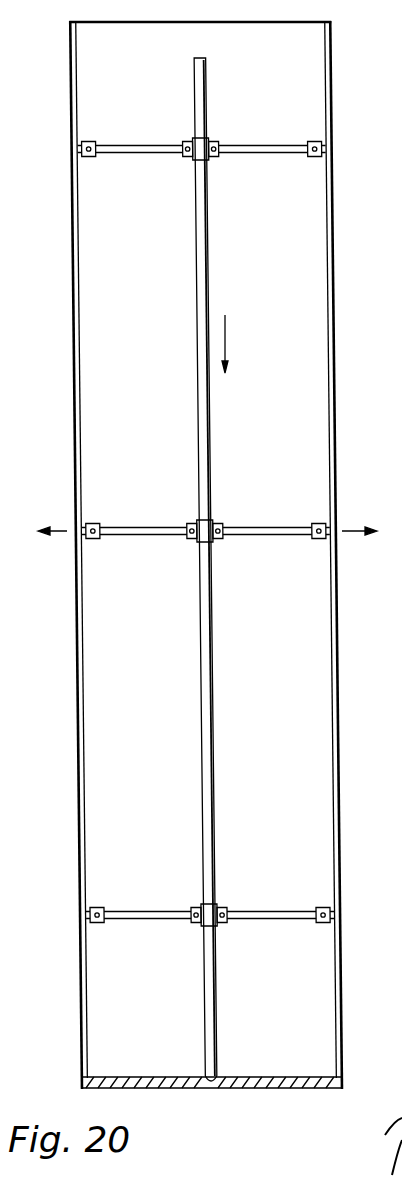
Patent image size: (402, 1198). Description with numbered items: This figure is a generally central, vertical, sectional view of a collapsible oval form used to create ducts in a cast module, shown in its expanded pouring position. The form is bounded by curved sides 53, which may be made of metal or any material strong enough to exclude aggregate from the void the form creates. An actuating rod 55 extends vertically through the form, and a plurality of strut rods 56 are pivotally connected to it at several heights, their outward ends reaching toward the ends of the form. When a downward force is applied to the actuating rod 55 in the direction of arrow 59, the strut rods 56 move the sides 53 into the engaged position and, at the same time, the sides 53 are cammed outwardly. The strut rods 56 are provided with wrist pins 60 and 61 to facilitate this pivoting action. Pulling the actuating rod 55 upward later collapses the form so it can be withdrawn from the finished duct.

The curved sides 53 is at (84, 800).
The actuating rod 55 is at (196, 218).
The strut rods 56 is at (138, 527).
The arrow 59 is at (227, 337).
The wrist pin 60 is at (90, 527).
The wrist pin 61 is at (196, 542).